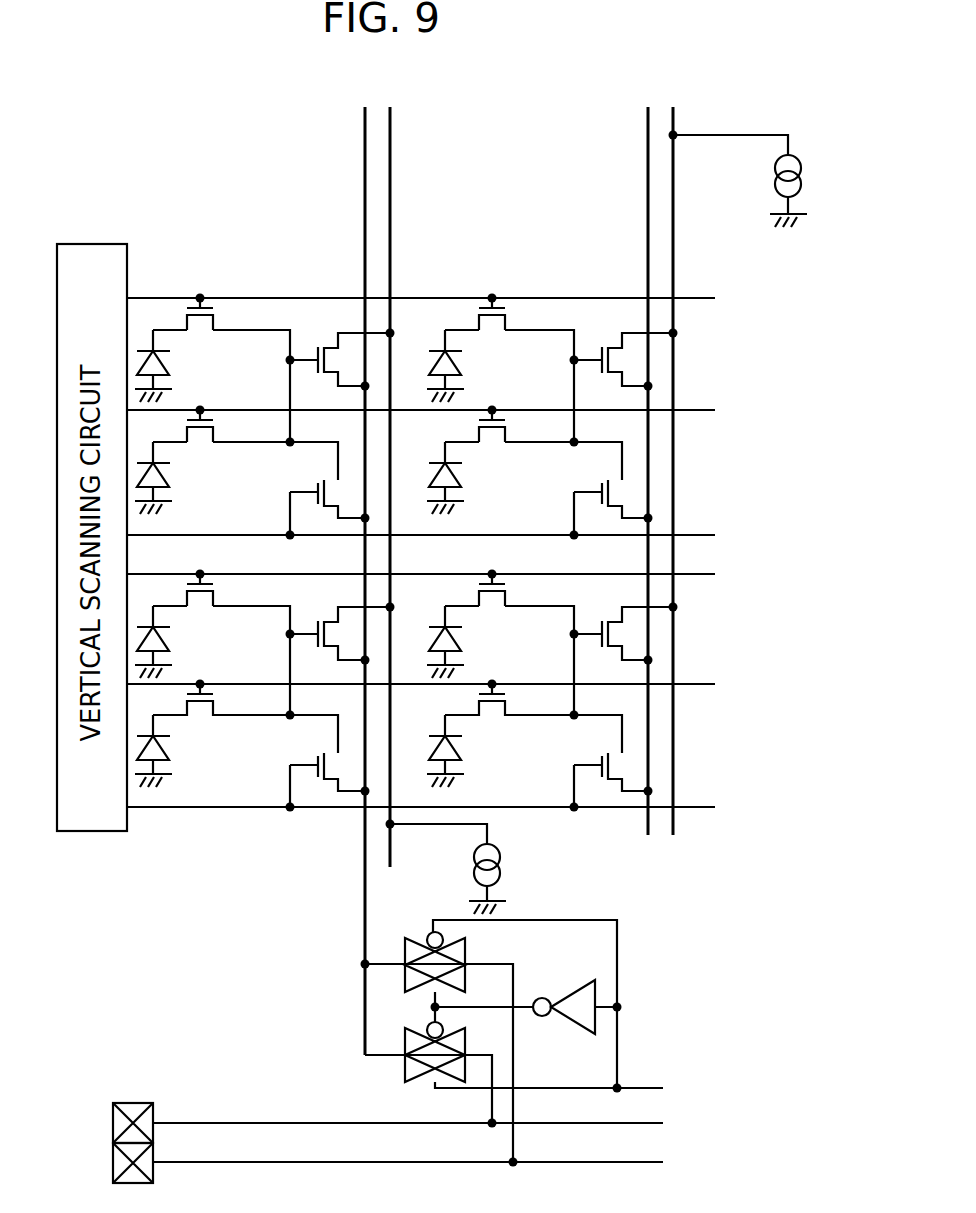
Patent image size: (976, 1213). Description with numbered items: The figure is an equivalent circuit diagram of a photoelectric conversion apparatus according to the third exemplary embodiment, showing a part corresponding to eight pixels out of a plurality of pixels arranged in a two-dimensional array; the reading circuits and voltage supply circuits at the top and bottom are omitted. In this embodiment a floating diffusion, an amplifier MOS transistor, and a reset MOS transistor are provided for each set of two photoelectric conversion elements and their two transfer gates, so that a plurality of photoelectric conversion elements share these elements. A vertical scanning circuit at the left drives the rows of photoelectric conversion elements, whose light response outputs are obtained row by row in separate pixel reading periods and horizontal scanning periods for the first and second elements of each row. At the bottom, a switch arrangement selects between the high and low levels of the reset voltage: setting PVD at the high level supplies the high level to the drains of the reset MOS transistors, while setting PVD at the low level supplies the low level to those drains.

The switch control signal PVD is at (579, 1089).